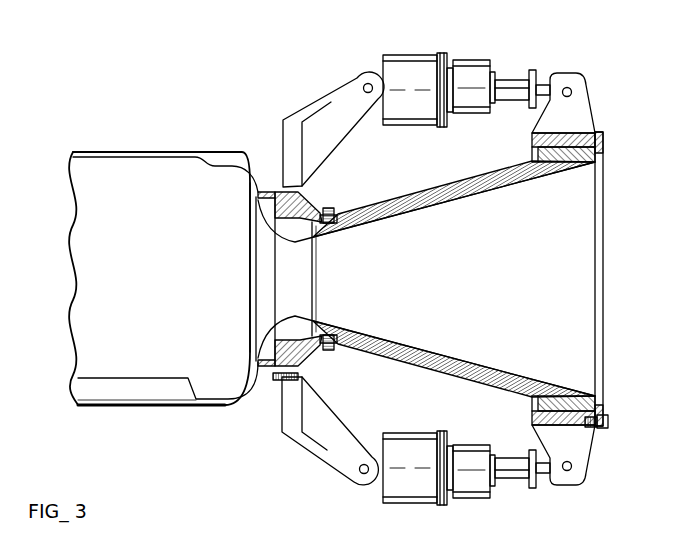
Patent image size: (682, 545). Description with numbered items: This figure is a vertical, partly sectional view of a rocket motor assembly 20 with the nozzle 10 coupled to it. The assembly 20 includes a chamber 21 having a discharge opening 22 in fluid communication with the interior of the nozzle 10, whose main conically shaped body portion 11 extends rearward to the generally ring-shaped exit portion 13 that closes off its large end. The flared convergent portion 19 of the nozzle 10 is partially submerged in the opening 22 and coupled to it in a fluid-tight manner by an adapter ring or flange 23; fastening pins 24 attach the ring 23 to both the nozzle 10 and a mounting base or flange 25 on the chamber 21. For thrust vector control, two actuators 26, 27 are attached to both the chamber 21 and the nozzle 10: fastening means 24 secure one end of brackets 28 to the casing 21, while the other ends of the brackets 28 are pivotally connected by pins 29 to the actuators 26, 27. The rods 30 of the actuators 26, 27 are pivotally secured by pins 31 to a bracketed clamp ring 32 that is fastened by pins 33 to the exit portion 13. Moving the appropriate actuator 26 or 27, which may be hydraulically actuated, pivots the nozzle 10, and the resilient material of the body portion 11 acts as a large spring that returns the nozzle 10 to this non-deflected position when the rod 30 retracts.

The nozzle 10 is at (472, 386).
The main conically shaped body portion 11 is at (440, 352).
The exit portion 13 is at (552, 402).
The convergent portion 19 is at (268, 328).
The rocket motor assembly 20 is at (190, 355).
The chamber 21 is at (152, 224).
The discharge opening 22 is at (250, 291).
The adapter ring or flange 23 is at (300, 354).
The pins 24 is at (328, 209).
The mounting base or flange 25 is at (273, 382).
The actuator 26 is at (426, 63).
The actuator 27 is at (424, 490).
The brackets 28 is at (346, 458).
The pins 29 is at (349, 488).
The rods 30 is at (543, 477).
The pins 31 is at (572, 478).
The bracketed clamp ring 32 is at (574, 440).
The pins 33 is at (606, 420).